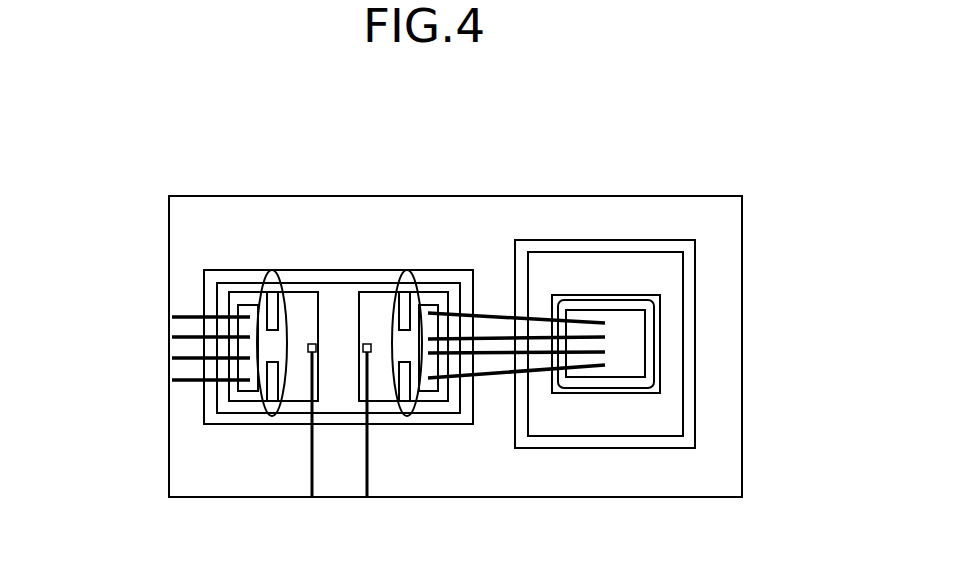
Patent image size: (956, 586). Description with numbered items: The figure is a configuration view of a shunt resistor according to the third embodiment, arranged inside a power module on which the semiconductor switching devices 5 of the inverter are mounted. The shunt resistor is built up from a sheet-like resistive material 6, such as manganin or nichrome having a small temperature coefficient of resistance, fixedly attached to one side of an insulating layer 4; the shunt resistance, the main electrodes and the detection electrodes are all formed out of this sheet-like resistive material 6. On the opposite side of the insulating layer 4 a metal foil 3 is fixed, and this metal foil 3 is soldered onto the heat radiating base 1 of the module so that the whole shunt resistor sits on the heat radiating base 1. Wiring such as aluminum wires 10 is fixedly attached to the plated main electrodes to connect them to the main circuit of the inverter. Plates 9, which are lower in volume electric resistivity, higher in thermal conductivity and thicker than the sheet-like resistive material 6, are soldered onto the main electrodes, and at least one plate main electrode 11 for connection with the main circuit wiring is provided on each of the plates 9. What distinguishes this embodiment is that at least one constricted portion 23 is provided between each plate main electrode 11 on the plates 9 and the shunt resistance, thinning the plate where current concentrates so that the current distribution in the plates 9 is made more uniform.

The heat radiating base 1 is at (618, 449).
The metal foil 3 is at (660, 274).
The insulating layer 4 is at (204, 282).
The semiconductor switching devices 5 is at (662, 380).
The sheet-like resistive material 6 is at (216, 303).
The plates 9 is at (300, 392).
The aluminum wires 10 is at (494, 374).
The plate main electrode 11 is at (433, 401).
The constricted portion 23 is at (405, 270).